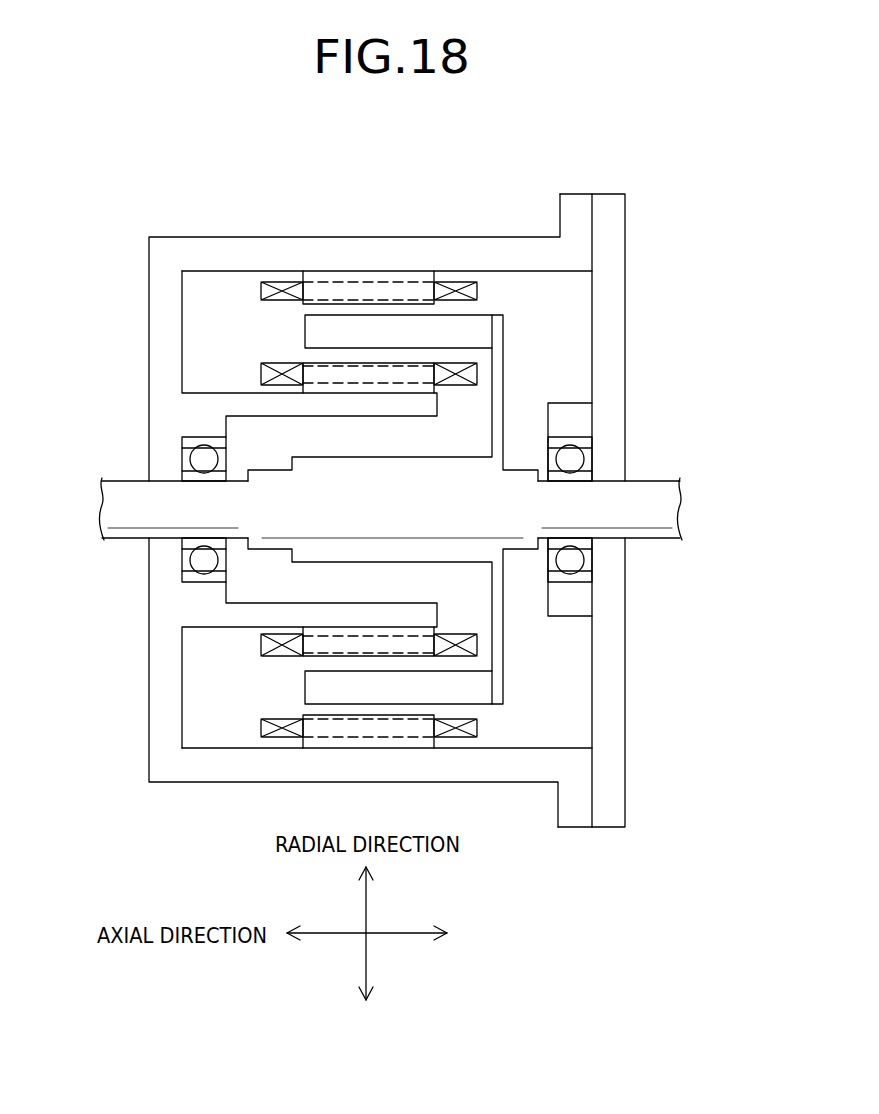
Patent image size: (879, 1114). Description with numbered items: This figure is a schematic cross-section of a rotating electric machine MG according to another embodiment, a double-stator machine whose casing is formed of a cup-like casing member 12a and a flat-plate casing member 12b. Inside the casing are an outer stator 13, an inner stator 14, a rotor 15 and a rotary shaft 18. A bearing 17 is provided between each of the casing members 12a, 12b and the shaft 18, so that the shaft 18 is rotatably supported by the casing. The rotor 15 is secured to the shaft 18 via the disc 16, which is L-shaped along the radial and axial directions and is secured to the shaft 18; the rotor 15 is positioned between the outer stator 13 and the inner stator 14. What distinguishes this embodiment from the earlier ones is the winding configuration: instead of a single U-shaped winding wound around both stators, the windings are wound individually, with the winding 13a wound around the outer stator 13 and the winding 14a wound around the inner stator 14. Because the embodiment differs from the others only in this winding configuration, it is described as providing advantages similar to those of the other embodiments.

The rotating electric machine MG is at (214, 177).
The cup-like casing member 12a is at (253, 250).
The flat-plate casing member 12b is at (612, 225).
The outer stator 13 is at (352, 290).
The winding 13a is at (260, 291).
The inner stator 14 is at (383, 375).
The winding 14a is at (260, 371).
The rotor 15 is at (468, 330).
The disc 16 is at (497, 360).
The bearing 17 is at (567, 460).
The rotary shaft 18 is at (643, 503).